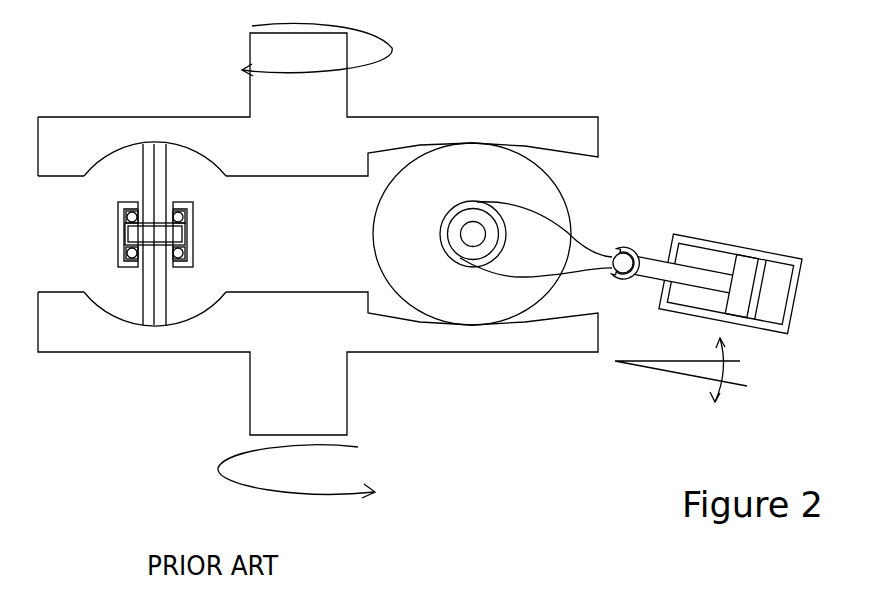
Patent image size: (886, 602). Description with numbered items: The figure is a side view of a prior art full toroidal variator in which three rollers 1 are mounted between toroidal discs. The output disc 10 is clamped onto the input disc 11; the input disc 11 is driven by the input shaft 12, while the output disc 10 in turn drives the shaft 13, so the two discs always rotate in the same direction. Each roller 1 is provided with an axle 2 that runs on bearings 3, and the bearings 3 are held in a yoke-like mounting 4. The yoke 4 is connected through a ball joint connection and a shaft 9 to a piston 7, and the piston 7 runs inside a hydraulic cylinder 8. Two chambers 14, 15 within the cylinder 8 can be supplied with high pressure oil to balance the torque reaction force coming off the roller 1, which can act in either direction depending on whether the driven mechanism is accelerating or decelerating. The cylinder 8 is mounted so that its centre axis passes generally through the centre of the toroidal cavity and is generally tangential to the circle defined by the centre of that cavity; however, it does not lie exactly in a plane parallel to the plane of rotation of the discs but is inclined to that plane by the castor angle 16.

The roller 1 is at (143, 172).
The axle 2 is at (118, 237).
The bearings 3 is at (183, 207).
The yoke-like mounting 4 is at (193, 237).
The piston 7 is at (745, 273).
The hydraulic cylinder 8 is at (805, 257).
The shaft 9 is at (675, 234).
The output disc 10 is at (85, 117).
The input disc 11 is at (87, 353).
The input shaft 12 is at (250, 391).
The shaft 13 is at (249, 45).
The chamber 14 is at (772, 288).
The chamber 15 is at (700, 298).
The castor angle 16 is at (680, 373).